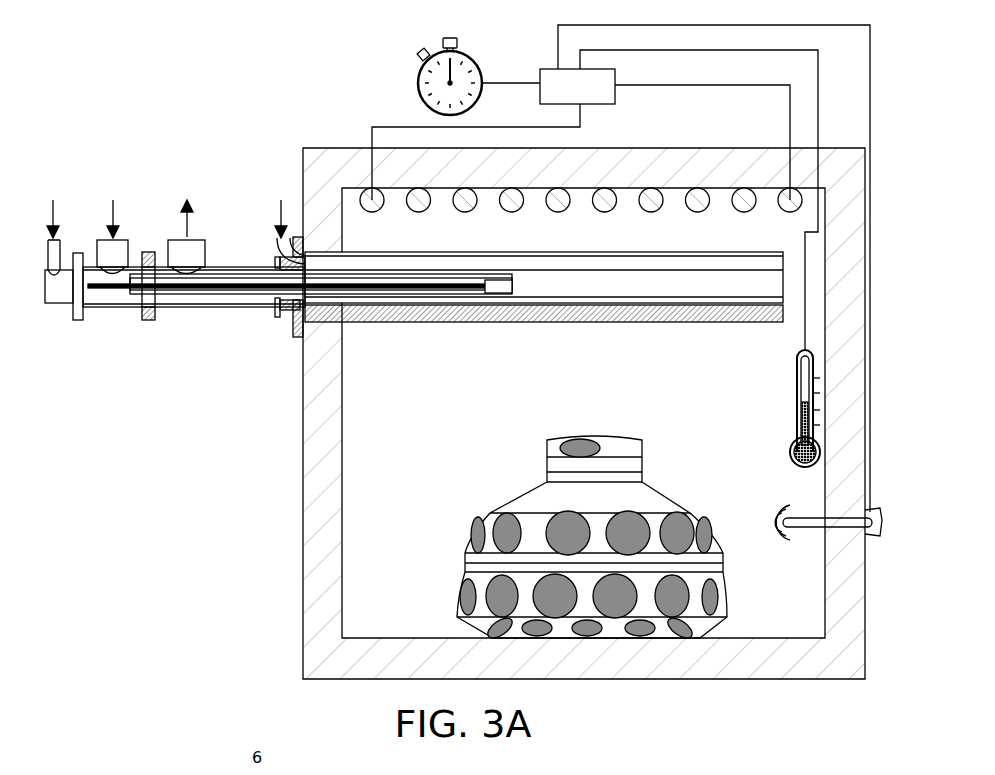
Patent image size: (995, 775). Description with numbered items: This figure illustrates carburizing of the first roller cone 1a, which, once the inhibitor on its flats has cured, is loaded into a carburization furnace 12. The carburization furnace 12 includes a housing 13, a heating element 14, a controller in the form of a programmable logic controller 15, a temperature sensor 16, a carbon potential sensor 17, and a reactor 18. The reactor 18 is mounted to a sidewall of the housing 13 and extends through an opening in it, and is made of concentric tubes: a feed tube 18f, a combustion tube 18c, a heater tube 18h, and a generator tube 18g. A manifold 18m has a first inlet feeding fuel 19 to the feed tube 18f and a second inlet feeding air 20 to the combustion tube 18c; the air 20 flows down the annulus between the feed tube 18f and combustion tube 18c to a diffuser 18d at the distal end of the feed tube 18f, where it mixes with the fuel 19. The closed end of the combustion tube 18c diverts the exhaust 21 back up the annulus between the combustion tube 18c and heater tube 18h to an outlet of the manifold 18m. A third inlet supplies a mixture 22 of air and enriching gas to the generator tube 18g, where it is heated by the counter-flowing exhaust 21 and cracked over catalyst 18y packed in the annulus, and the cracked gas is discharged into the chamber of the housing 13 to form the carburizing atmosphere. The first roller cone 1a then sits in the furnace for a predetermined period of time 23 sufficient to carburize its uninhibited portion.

The first roller cone 1a is at (530, 494).
The carburization furnace 12 is at (129, 91).
The housing 13 is at (322, 148).
The heating element 14 is at (352, 190).
The programmable logic controller (PLC) 15 is at (615, 102).
The temperature sensor 16 is at (797, 380).
The carbon potential sensor 17 is at (812, 530).
The reactor 18 is at (305, 296).
The manifold 18m is at (83, 322).
The feed tube 18f is at (110, 290).
The combustion tube 18c is at (177, 300).
The heater tube 18h is at (274, 319).
The generator tube 18g is at (453, 252).
The diffuser 18d is at (517, 283).
The catalyst 18y is at (757, 302).
The fuel 19 is at (58, 208).
The air 20 is at (116, 210).
The exhaust 21 is at (192, 225).
The mixture of air and enriching gas 22 is at (278, 213).
The predetermined period of time 23 is at (420, 70).